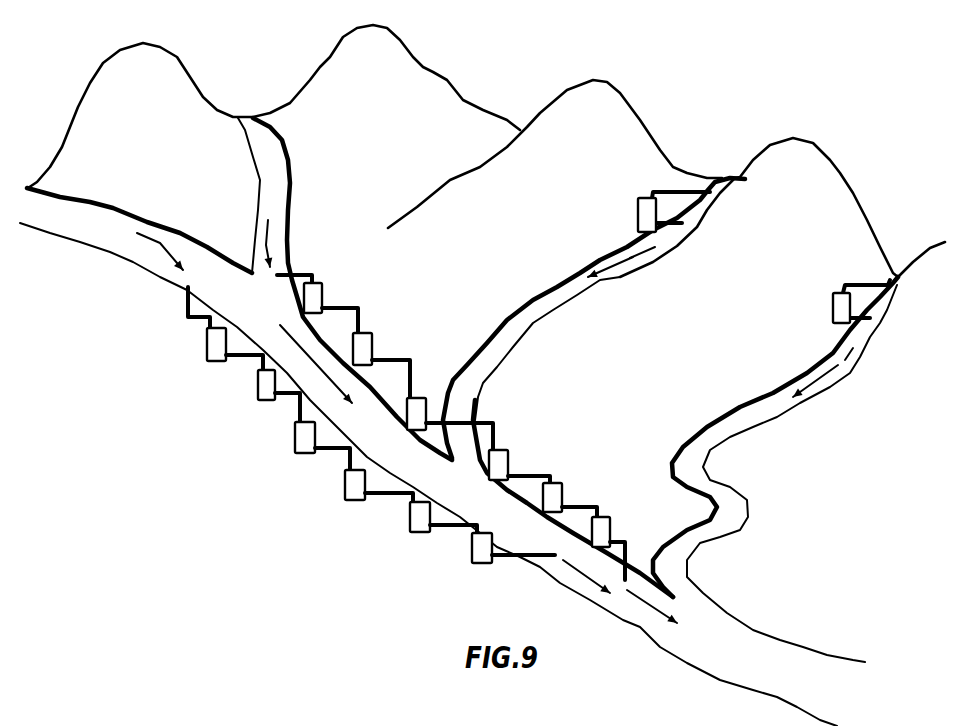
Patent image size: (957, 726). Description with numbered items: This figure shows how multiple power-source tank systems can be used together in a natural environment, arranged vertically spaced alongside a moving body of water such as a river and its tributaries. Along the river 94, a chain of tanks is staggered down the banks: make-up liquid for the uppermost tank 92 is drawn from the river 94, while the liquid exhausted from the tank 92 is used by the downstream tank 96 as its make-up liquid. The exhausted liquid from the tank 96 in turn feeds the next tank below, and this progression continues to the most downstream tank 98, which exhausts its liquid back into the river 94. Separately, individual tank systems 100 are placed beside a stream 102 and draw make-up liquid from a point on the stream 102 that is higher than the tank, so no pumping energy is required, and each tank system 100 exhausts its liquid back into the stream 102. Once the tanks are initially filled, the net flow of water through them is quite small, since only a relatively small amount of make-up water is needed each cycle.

The uppermost tank 92 is at (207, 343).
The river 94 is at (153, 248).
The downstream tank 96 is at (258, 387).
The most downstream tank 98 is at (473, 545).
The tank system 100 is at (638, 209).
The stream 102 is at (573, 285).